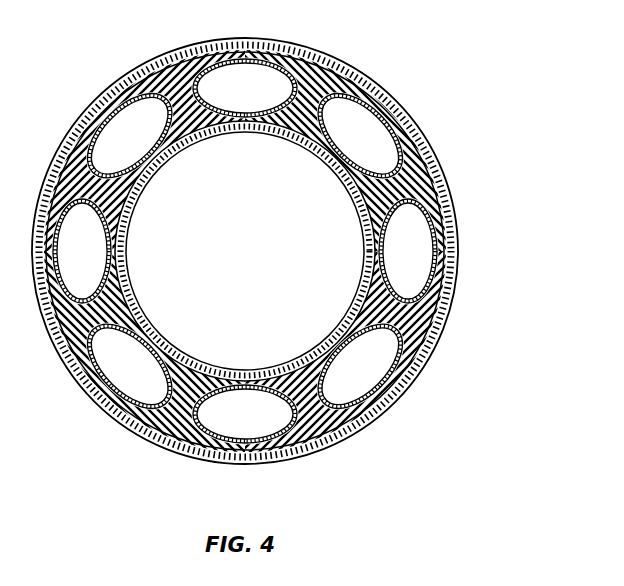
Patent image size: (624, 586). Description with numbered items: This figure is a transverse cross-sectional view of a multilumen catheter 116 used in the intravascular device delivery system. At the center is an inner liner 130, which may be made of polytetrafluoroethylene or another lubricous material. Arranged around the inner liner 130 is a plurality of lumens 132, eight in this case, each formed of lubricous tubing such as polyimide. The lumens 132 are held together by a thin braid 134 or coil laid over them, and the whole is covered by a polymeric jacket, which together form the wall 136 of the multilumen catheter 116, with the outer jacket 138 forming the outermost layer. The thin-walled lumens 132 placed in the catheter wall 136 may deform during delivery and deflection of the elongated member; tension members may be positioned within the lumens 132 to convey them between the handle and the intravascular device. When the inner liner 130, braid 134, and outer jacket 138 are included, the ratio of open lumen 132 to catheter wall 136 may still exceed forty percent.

The multilumen catheter 116 is at (299, 250).
The inner liner 130 is at (198, 143).
The lumen 132 is at (415, 245).
The braid 134 is at (406, 110).
The wall 136 is at (440, 320).
The outer jacket 138 is at (395, 398).